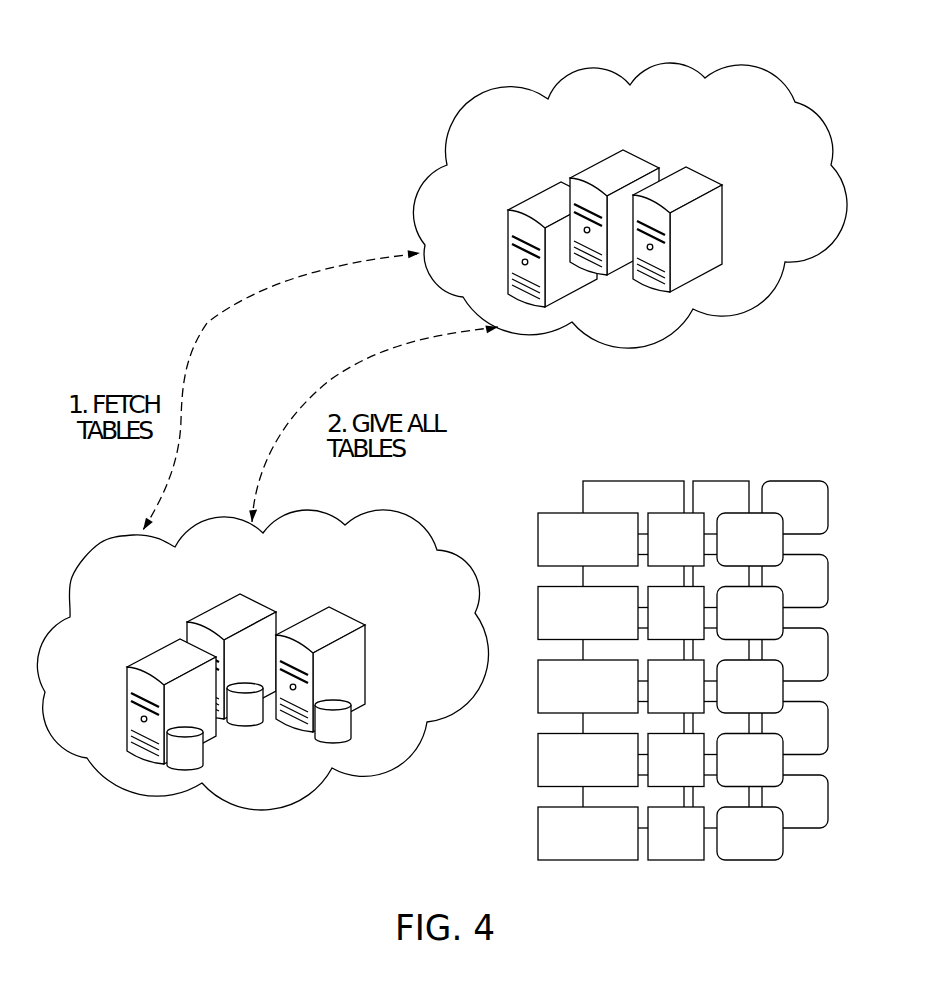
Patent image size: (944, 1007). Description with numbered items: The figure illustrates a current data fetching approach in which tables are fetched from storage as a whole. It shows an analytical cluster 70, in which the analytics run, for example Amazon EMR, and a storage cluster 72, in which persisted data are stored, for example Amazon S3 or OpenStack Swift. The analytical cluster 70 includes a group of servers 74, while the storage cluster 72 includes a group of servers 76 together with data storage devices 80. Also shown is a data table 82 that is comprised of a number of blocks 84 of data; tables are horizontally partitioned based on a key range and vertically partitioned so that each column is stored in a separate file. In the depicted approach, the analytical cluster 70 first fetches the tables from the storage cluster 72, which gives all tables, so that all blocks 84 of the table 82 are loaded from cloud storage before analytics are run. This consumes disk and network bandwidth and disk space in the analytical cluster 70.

The analytical cluster 70 is at (630, 181).
The storage cluster 72 is at (253, 660).
The servers 74 is at (722, 220).
The servers 76 is at (153, 650).
The data storage devices 80 is at (205, 762).
The data table 82 is at (707, 652).
The blocks 84 is at (828, 661).